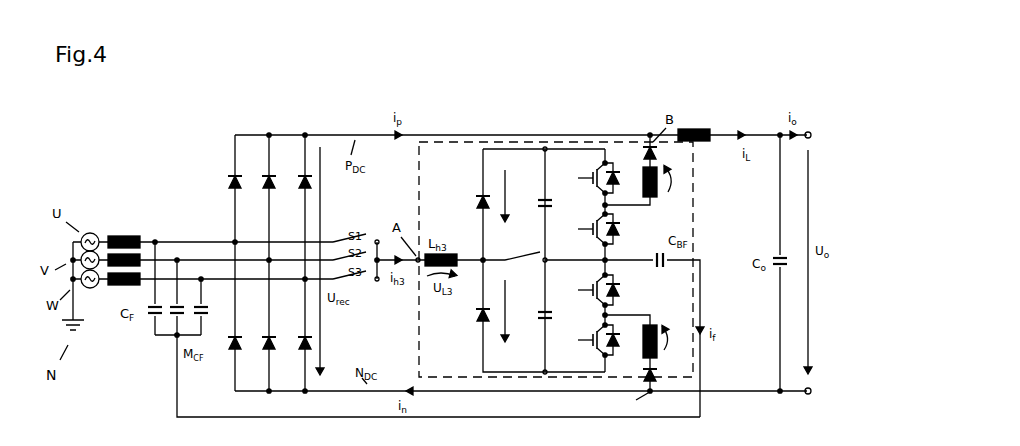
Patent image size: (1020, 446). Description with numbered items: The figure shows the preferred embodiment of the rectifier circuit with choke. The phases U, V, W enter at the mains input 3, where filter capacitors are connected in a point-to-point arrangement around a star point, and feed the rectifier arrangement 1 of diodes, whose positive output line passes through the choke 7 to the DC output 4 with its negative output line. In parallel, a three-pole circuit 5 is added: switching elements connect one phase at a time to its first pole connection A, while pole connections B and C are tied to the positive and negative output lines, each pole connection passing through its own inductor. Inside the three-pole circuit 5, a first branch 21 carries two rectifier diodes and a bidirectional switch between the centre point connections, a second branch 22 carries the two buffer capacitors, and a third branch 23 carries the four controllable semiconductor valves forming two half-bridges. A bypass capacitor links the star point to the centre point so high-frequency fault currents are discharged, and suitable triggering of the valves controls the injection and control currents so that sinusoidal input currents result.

The rectifier arrangement 1 is at (315, 120).
The mains input 3 is at (230, 164).
The DC output 4 is at (758, 100).
The three-pole circuit 5 is at (417, 168).
The choke 7 is at (700, 129).
The first branch 21 is at (486, 160).
The second branch 22 is at (548, 160).
The third branch 23 is at (612, 150).